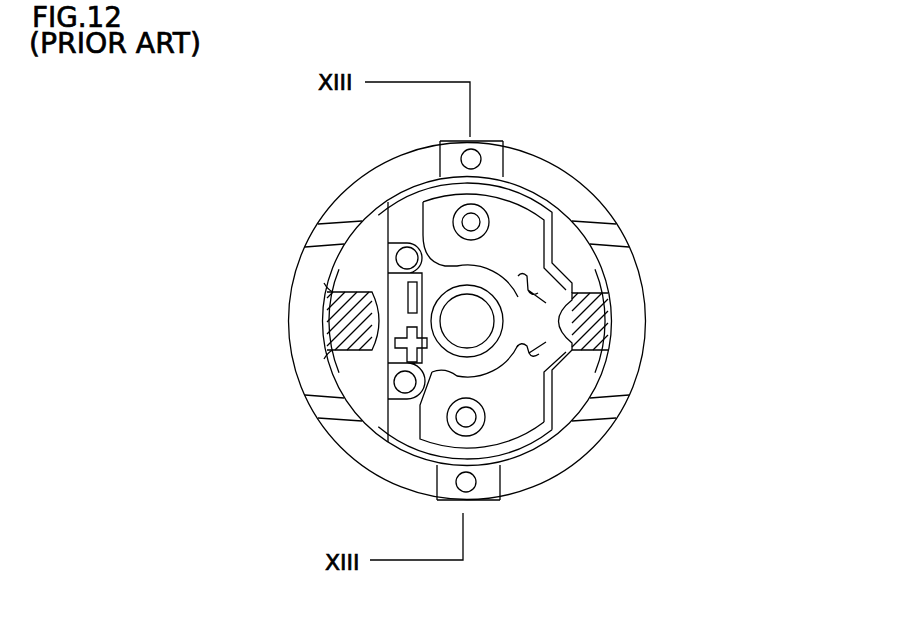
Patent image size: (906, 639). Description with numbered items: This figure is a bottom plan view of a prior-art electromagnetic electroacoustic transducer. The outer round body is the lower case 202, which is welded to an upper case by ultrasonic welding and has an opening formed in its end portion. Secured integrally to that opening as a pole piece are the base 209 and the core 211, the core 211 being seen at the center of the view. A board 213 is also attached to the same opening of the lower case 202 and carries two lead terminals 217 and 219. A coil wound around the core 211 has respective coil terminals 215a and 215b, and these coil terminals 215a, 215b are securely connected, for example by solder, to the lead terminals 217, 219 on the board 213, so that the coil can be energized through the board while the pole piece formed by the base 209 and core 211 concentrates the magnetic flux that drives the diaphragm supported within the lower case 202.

The lower case 202 is at (600, 206).
The base 209 is at (392, 422).
The core 211 is at (473, 335).
The board 213 is at (528, 418).
The coil terminal 215a is at (593, 262).
The coil terminal 215b is at (603, 360).
The lead terminal 217 is at (473, 222).
The lead terminal 219 is at (467, 420).